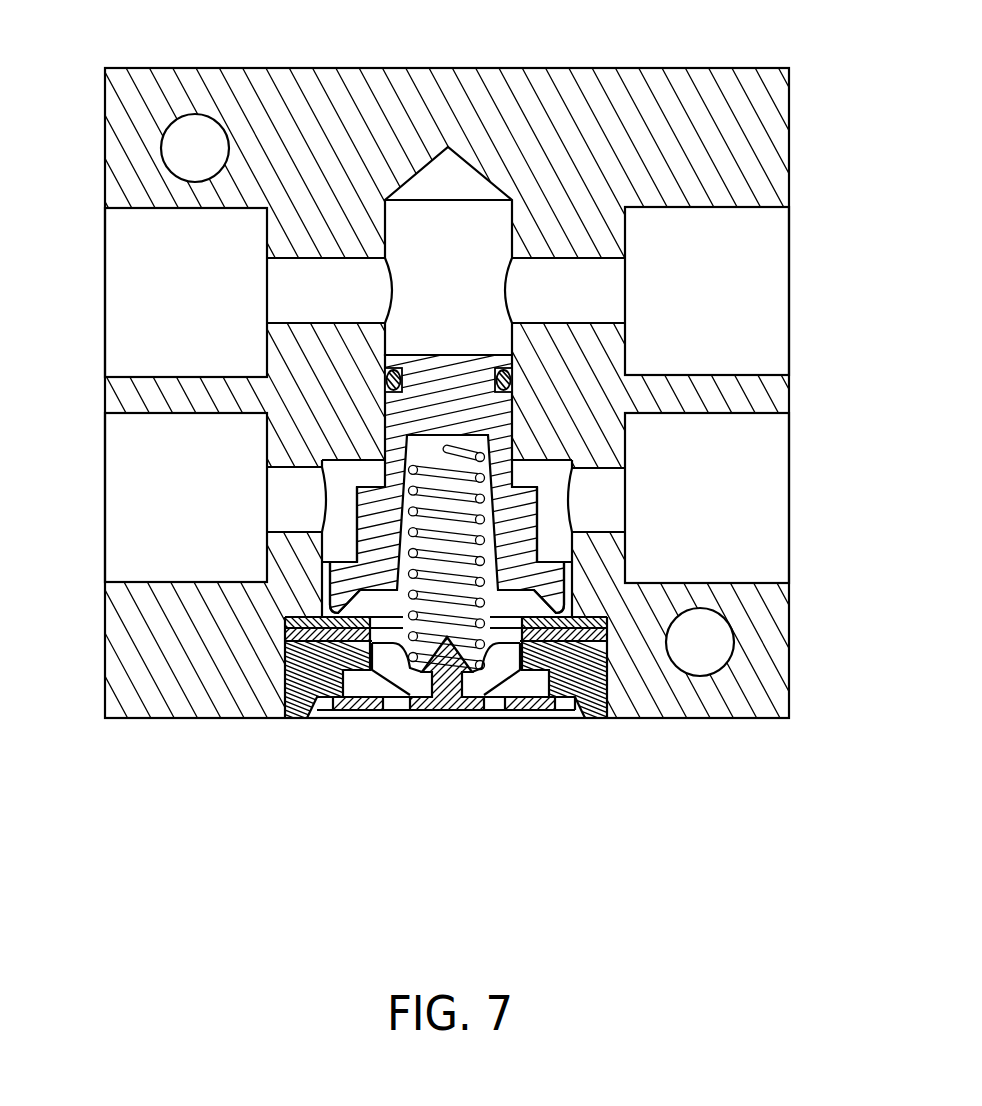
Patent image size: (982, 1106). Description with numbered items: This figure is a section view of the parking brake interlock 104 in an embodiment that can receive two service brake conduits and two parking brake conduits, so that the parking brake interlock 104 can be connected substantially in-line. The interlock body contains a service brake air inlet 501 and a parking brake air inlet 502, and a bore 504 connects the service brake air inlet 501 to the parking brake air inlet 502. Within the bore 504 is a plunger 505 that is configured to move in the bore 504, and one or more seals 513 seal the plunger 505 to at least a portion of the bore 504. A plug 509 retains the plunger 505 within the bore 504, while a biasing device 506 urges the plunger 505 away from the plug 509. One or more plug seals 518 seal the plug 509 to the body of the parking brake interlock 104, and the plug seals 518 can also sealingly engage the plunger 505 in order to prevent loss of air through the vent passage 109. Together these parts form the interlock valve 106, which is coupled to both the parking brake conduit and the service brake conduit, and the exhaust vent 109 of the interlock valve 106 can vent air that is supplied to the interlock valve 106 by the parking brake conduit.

The parking brake interlock 104 is at (158, 853).
The interlock valve 106 is at (623, 790).
The exhaust vent 109 is at (478, 757).
The service brake air inlet 501 is at (132, 237).
The parking brake air inlet 502 is at (113, 470).
The bore 504 is at (488, 216).
The plunger 505 is at (535, 480).
The biasing device 506 is at (493, 540).
The plug 509 is at (607, 667).
The seals 513 is at (512, 375).
The plug seals 518 is at (607, 620).